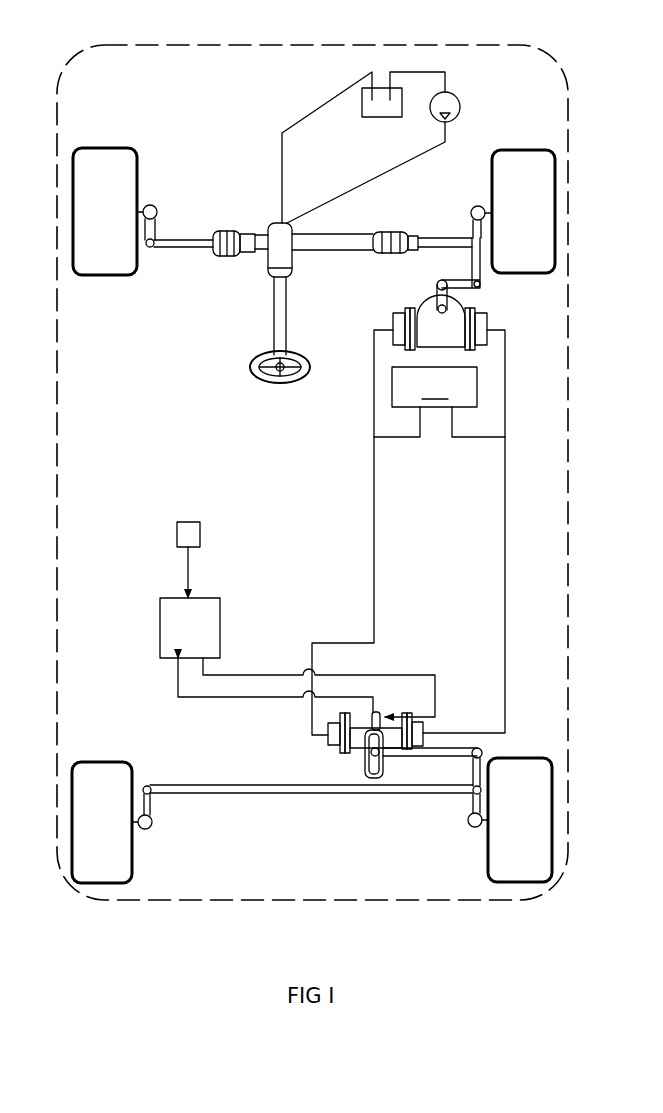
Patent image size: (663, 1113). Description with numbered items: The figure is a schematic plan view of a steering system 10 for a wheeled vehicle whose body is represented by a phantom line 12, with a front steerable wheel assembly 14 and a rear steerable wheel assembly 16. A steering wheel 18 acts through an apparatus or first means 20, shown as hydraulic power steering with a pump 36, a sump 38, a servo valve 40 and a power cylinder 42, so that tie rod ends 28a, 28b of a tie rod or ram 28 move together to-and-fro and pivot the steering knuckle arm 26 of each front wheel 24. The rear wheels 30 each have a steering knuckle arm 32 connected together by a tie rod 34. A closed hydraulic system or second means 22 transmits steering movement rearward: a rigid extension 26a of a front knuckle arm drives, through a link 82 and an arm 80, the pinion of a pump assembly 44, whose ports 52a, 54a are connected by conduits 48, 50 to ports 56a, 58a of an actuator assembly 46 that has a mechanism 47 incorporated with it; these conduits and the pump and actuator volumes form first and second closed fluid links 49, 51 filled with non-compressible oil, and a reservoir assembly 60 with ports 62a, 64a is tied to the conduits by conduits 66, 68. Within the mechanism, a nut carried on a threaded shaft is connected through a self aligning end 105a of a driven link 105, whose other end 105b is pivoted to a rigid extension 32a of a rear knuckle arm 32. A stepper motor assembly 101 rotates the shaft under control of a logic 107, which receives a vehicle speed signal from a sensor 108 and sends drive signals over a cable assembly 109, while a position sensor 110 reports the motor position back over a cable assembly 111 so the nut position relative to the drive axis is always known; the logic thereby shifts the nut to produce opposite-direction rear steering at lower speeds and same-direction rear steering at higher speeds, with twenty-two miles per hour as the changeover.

The steering system 10 is at (220, 405).
The phantom line 12 is at (205, 45).
The front steerable wheel assembly 14 is at (150, 163).
The rear steerable wheel assembly 16 is at (153, 768).
The steering wheel 18 is at (250, 365).
The apparatus or first means 20 is at (255, 262).
The closed hydraulic system or second means 22 is at (372, 512).
The front wheels 24 is at (105, 148).
The steering knuckle arm 26 is at (155, 207).
The rigid extension 26a is at (482, 278).
The tie rod or ram 28 is at (215, 235).
The tie rod end 28a is at (180, 240).
The tie rod end 28b is at (437, 238).
The rear wheels 30 is at (100, 762).
The steering knuckle arm 32 is at (153, 825).
The rigid extension 32a is at (472, 775).
The tie rod 34 is at (207, 785).
The pump 36 is at (458, 100).
The sump 38 is at (380, 117).
The servo valve 40 is at (292, 227).
The power cylinder 42 is at (340, 250).
The pump assembly 44 is at (448, 348).
The actuator assembly 46 is at (337, 758).
The mechanism 47 is at (363, 770).
The conduit or passage 48 is at (375, 515).
The first closed fluid flow branch or closed fluid link 49 is at (372, 572).
The conduit or passage 50 is at (503, 515).
The second closed fluid flow branch or closed fluid link 51 is at (507, 573).
The port 52a is at (392, 330).
The port 54a is at (490, 330).
The port 56a is at (328, 735).
The port 58a is at (413, 725).
The reservoir assembly 60 is at (434, 387).
The port 62a is at (400, 408).
The port 64a is at (447, 410).
The conduit or passage 66 is at (393, 437).
The conduit or passage 68 is at (485, 440).
The arm 80 is at (436, 297).
The link 82 is at (458, 281).
The stepper motor assembly 101 is at (370, 714).
The driven link 105 is at (458, 748).
The self aligning end 105a is at (383, 770).
The other end 105b is at (482, 752).
The logic 107 is at (160, 618).
The sensor 108 is at (177, 530).
The cable assembly 109 is at (250, 675).
The position sensor 110 is at (378, 712).
The cable assembly 111 is at (178, 695).